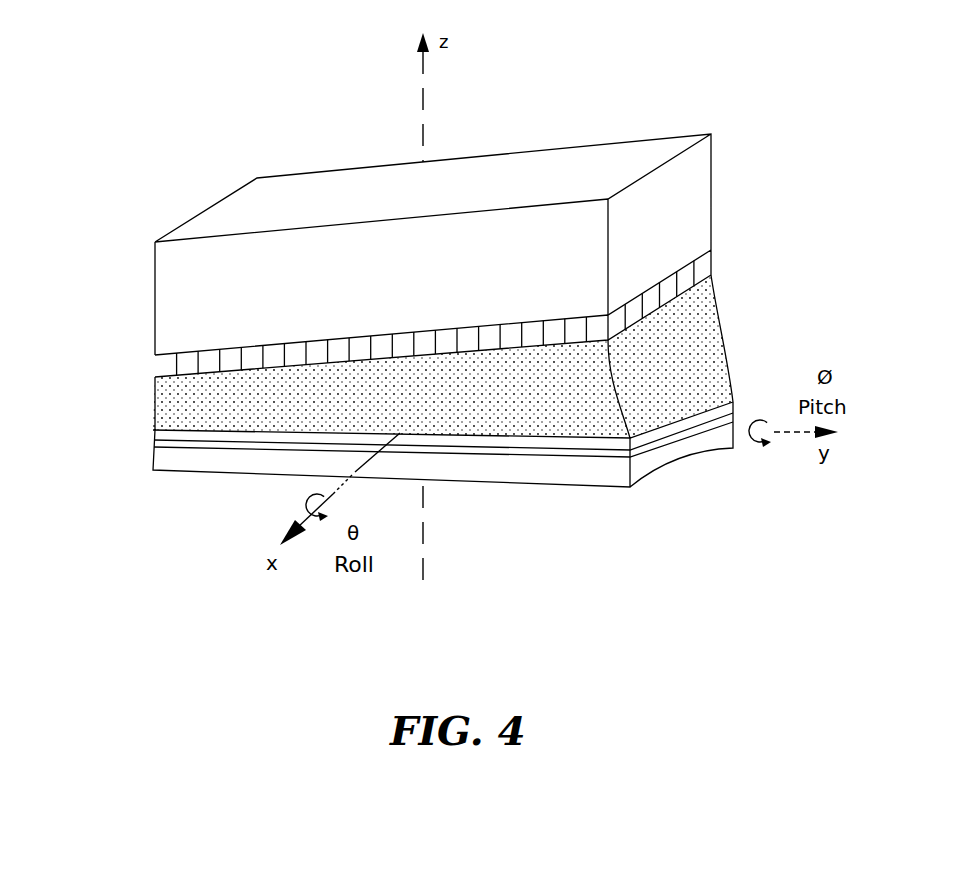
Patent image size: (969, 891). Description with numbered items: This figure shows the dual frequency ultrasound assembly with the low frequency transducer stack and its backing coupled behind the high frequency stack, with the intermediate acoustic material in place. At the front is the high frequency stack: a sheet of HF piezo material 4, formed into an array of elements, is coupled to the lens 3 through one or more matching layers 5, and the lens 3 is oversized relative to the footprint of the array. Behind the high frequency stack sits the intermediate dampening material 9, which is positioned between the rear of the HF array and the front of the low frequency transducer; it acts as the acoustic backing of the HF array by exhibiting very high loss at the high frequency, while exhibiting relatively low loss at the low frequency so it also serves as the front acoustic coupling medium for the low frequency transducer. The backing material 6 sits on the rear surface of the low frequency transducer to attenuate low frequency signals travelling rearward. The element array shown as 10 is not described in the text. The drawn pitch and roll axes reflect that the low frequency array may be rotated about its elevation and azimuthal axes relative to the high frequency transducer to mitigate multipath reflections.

The lens 3 is at (600, 476).
The HF piezo material 4 is at (153, 415).
The matching layers 5 is at (155, 447).
The backing material 6 is at (695, 177).
The intermediate dampening material 9 is at (718, 337).
The electrode array 10 is at (705, 267).